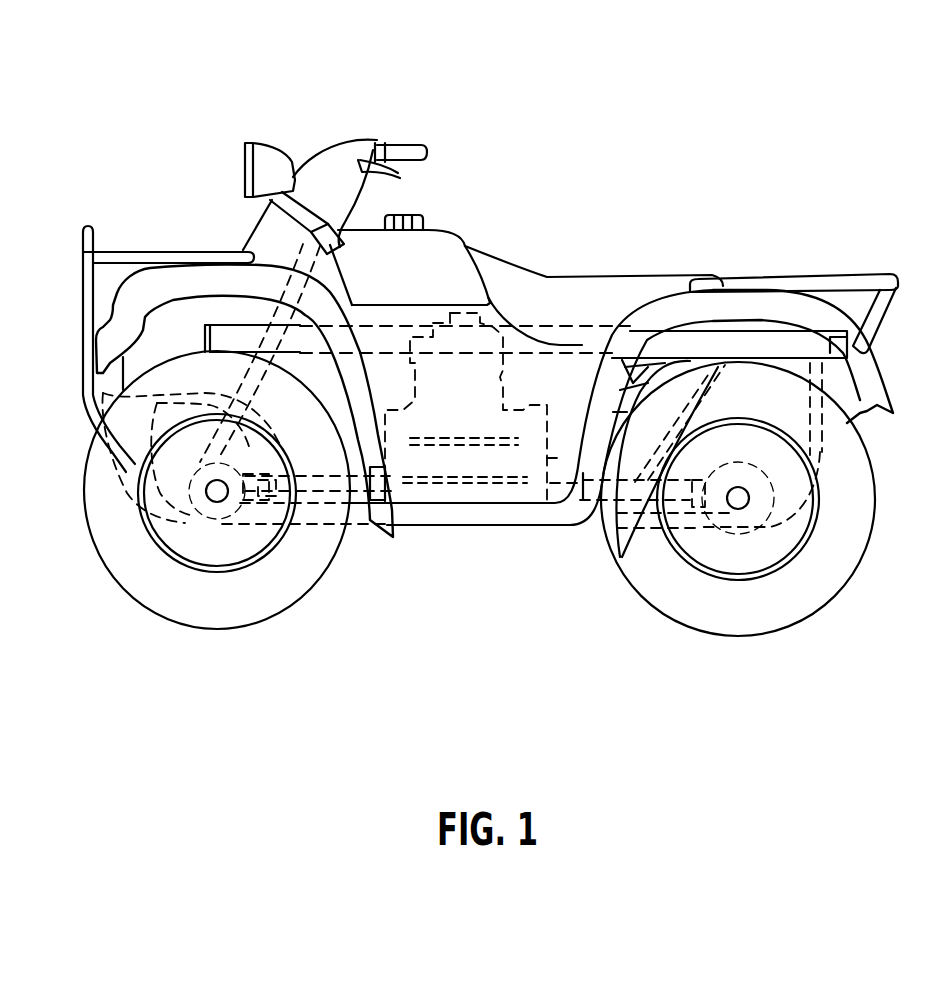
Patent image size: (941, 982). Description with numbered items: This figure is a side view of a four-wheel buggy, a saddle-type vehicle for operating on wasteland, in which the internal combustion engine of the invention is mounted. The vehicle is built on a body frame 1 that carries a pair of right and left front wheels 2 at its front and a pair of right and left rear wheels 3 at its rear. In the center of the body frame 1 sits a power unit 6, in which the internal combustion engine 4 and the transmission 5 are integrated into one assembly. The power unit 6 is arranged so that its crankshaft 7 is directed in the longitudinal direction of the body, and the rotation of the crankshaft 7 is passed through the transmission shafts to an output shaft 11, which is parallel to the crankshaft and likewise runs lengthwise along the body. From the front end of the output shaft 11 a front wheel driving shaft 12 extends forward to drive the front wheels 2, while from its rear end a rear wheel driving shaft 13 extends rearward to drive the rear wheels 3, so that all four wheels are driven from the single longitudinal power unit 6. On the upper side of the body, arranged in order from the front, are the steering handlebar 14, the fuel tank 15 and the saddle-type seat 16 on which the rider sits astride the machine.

The body frame 1 is at (730, 347).
The front wheels 2 is at (195, 613).
The rear wheels 3 is at (753, 615).
The internal combustion engine 4 is at (450, 370).
The transmission 5 is at (540, 408).
The power unit 6 is at (545, 40).
The crankshaft 7 is at (440, 447).
The output shaft 11 is at (493, 483).
The front wheel driving shaft 12 is at (304, 497).
The rear wheel driving shaft 13 is at (612, 482).
The steering handlebar 14 is at (404, 142).
The fuel tank 15 is at (440, 240).
The saddle-type seat 16 is at (643, 280).